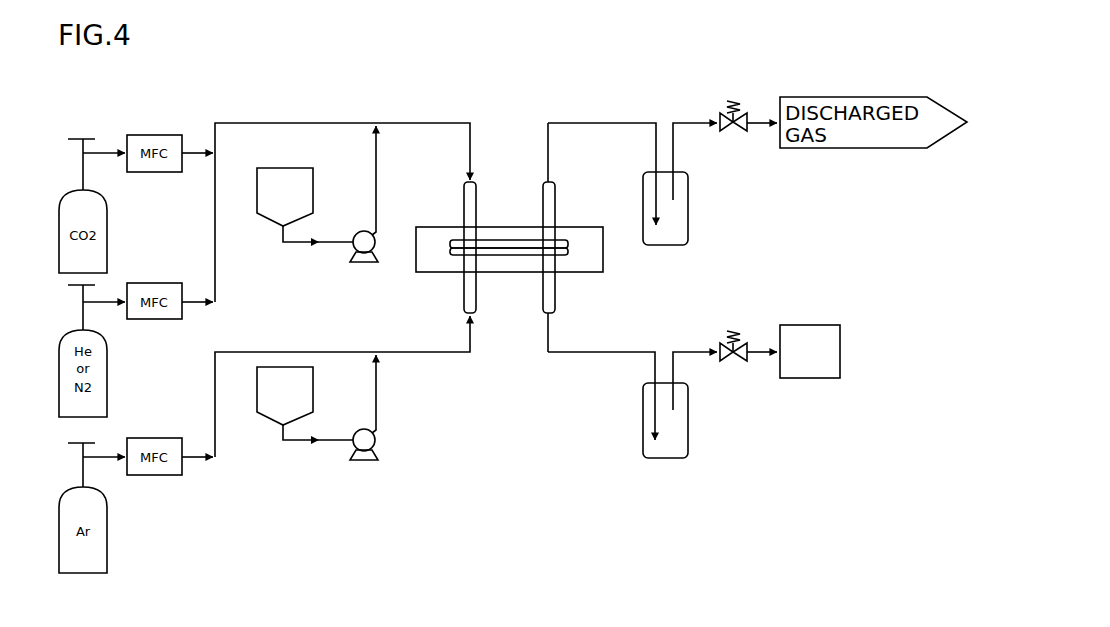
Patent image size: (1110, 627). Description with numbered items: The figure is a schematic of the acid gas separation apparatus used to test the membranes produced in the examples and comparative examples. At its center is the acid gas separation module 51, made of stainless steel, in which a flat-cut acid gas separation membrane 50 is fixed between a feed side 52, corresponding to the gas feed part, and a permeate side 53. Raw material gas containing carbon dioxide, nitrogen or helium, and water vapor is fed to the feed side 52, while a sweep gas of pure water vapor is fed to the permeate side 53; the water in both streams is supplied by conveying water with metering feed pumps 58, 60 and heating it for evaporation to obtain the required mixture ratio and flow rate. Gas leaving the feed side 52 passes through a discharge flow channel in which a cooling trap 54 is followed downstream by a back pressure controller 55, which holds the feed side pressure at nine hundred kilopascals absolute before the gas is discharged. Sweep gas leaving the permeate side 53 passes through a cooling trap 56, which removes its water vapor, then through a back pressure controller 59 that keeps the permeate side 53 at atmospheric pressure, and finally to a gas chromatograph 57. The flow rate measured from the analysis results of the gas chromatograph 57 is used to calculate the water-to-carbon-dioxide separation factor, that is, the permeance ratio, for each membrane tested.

The acid gas separation membrane 50 is at (456, 240).
The acid gas separation module 51 is at (571, 215).
The feed side of acid gas separation module 52 is at (505, 239).
The permeate side of acid gas separation module 53 is at (507, 256).
The cooling trap 54 is at (694, 207).
The back pressure controller 55 is at (716, 97).
The cooling trap 56 is at (694, 415).
The gas chromatograph 57 is at (810, 324).
The metering feed pump 58 is at (357, 229).
The back pressure controller 59 is at (716, 326).
The metering feed pump 60 is at (357, 426).